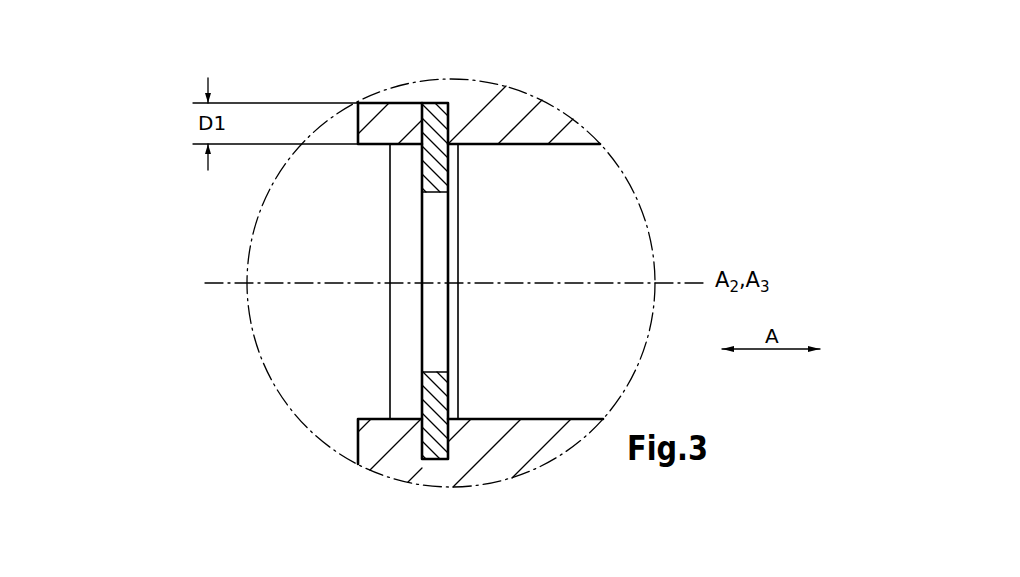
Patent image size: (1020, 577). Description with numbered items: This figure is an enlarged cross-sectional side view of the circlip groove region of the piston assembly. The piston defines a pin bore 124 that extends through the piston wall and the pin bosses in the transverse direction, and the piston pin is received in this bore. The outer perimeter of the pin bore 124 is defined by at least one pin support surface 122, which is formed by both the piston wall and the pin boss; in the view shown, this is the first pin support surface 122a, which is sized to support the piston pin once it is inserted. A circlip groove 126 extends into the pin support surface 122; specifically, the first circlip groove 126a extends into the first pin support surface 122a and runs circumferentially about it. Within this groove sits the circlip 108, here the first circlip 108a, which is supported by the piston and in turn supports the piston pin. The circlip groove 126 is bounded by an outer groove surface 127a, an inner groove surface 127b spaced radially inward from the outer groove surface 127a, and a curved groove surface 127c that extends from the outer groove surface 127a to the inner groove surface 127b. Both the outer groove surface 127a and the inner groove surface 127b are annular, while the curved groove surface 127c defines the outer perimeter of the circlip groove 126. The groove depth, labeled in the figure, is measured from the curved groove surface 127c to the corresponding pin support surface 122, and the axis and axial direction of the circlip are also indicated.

The pin support surface 122 is at (564, 127).
The first pin support surface 122a is at (571, 145).
The circlip 108 is at (393, 443).
The first circlip 108a is at (435, 399).
The circlip groove 126 is at (293, 281).
The first circlip groove 126a is at (422, 148).
The outer groove surface 127a is at (444, 236).
The inner groove surface 127b is at (444, 236).
The curved groove surface 127c is at (448, 138).
The pin bore 124 is at (332, 363).